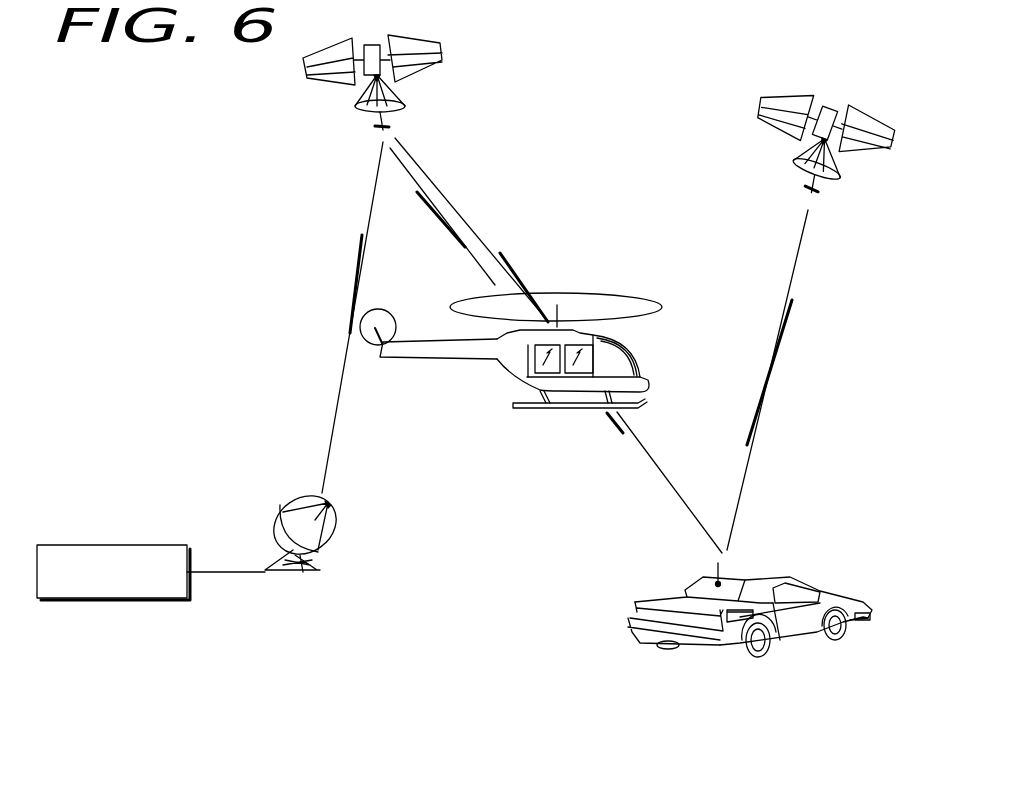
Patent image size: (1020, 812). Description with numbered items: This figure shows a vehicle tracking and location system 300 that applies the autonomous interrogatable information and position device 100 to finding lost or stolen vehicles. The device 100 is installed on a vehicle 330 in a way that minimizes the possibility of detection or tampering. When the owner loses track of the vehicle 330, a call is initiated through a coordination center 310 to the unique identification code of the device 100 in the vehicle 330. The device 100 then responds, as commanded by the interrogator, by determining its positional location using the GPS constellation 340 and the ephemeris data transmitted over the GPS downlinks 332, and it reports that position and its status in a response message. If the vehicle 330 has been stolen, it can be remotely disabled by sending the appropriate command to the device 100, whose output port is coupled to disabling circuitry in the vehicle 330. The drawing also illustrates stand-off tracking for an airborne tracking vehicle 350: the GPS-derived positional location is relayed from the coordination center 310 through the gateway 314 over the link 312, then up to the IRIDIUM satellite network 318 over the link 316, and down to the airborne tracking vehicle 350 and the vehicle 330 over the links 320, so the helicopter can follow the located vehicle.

The vehicle tracking and location system 300 is at (190, 132).
The IRIDIUM satellite network 318 is at (332, 78).
The GPS constellation 340 is at (778, 120).
The link 316 is at (347, 341).
The link 320 is at (444, 233).
The GPS downlinks 332 is at (780, 355).
The airborne tracking vehicle 350 is at (513, 378).
The gateway 314 is at (290, 497).
The coordination center 310 is at (113, 545).
The link 312 is at (217, 573).
The vehicle 330 is at (772, 578).
The autonomous interrogatable information and position device 100 is at (737, 613).